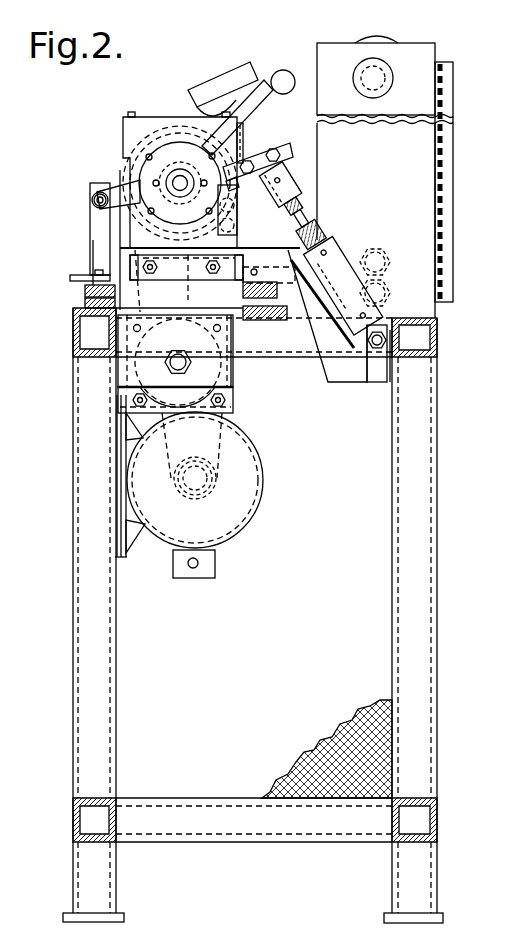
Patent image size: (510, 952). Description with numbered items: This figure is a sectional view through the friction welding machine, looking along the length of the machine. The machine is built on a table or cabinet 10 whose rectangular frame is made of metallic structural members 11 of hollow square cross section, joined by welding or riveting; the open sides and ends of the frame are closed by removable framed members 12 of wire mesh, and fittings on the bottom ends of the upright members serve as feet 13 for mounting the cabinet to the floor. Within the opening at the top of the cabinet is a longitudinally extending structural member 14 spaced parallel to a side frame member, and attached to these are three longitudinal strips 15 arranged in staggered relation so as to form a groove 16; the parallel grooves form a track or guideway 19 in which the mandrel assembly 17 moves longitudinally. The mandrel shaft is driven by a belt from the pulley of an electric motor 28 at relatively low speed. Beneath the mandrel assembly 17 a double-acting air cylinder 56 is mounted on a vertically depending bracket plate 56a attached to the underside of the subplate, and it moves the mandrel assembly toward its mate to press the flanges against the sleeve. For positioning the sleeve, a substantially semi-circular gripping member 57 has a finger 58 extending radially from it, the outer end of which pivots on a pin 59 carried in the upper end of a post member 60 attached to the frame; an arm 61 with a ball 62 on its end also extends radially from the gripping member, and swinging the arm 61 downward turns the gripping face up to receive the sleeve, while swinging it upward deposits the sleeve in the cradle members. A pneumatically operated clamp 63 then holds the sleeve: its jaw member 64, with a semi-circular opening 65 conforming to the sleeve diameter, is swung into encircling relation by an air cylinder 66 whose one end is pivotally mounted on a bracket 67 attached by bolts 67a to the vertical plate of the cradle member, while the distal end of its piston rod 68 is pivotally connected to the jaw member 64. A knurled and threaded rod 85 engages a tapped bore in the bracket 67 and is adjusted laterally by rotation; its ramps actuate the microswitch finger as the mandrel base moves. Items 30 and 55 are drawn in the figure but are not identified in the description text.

The table or cabinet 10 is at (232, 615).
The metallic structural members 11 is at (110, 748).
The framed members of wire mesh 12 is at (340, 733).
The feet 13 is at (118, 912).
The longitudinally extending structural member 14 is at (268, 360).
The longitudinal members or strips 15 is at (85, 291).
The groove 16 is at (82, 332).
The mandrel assembly 17 is at (116, 141).
The track or guideway 19 is at (265, 255).
The electric motor 28 is at (266, 510).
The guard strip 30 is at (122, 533).
The motor mount 55 is at (118, 392).
The air cylinder 56 is at (228, 402).
The vertically depending bracket plate 56a is at (232, 406).
The gripping member 57 is at (143, 174).
The finger 58 is at (118, 215).
The pin 59 is at (99, 201).
The post member 60 is at (97, 253).
The arm 61 is at (258, 72).
The ball 62 is at (286, 76).
The pneumatically operated clamp 63 is at (279, 124).
The jaw member 64 is at (187, 98).
The semi-circular opening 65 is at (209, 103).
The air cylinder 66 is at (347, 253).
The bracket 67 is at (349, 367).
The bolts 67a is at (212, 273).
The piston rod 68 is at (295, 193).
The rod 85 is at (250, 272).